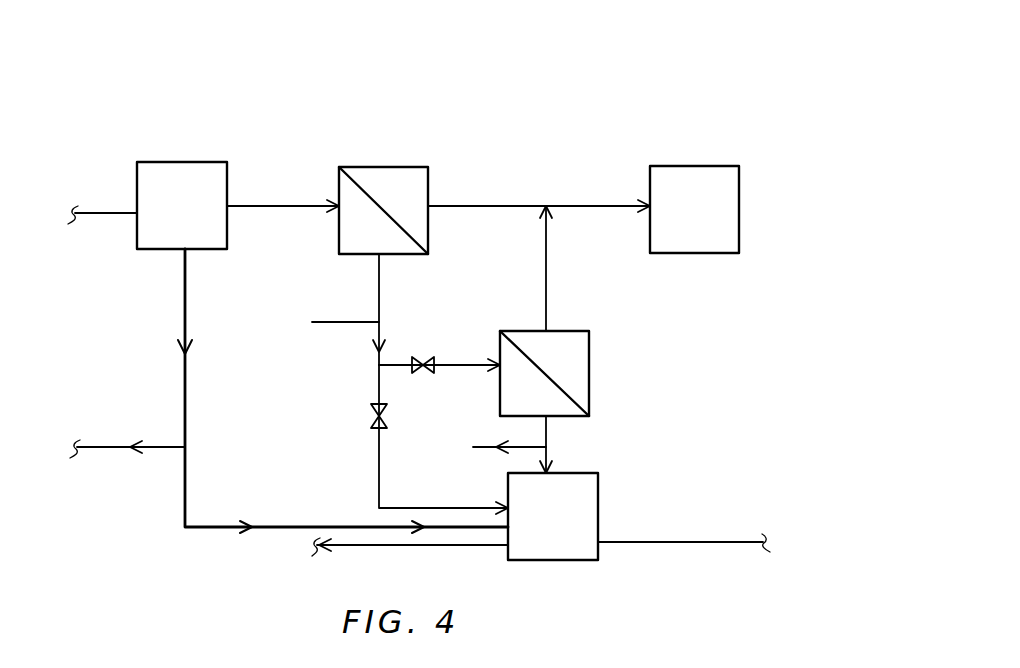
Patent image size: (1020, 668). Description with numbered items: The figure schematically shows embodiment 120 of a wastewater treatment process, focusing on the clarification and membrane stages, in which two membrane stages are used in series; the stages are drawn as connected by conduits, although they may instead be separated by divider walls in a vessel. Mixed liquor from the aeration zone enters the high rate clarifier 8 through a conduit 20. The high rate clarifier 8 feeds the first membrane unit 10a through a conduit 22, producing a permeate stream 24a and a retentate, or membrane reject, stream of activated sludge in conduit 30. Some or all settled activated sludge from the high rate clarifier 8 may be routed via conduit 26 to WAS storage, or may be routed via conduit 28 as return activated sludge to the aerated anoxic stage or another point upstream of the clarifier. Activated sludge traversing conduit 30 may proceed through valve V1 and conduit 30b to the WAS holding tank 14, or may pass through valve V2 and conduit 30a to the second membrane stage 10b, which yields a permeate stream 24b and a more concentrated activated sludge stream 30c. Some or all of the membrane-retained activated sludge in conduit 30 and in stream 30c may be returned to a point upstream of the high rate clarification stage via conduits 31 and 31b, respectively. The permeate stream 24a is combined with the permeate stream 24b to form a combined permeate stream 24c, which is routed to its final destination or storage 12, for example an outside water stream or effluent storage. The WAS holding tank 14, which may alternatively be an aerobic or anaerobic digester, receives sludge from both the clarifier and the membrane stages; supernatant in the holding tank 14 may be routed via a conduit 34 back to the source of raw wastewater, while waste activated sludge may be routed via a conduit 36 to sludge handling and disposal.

The embodiment 120 is at (702, 61).
The high rate clarifier 8 is at (177, 162).
The conduit 20 is at (92, 213).
The conduit 22 is at (264, 206).
The membrane unit 10a is at (385, 167).
The permeate stream 24a is at (466, 206).
The permeate stream 24b is at (546, 286).
The combined permeate stream 24c is at (580, 206).
The treated effluent storage or final destination 12 is at (686, 166).
The second membrane stage 10b is at (589, 360).
The retentate stream conduit 30 is at (379, 292).
The conduit 31 is at (308, 334).
The conduit 30a is at (442, 365).
The valve V2 is at (412, 358).
The valve V1 is at (371, 420).
The conduit 30b is at (379, 462).
The conduit 31b is at (472, 460).
The concentrated activated sludge stream 30c is at (546, 438).
The WAS holding tank 14 is at (598, 510).
The conduit 26 is at (185, 416).
The conduit 28 is at (104, 447).
The conduit 34 is at (398, 545).
The conduit 36 is at (691, 544).